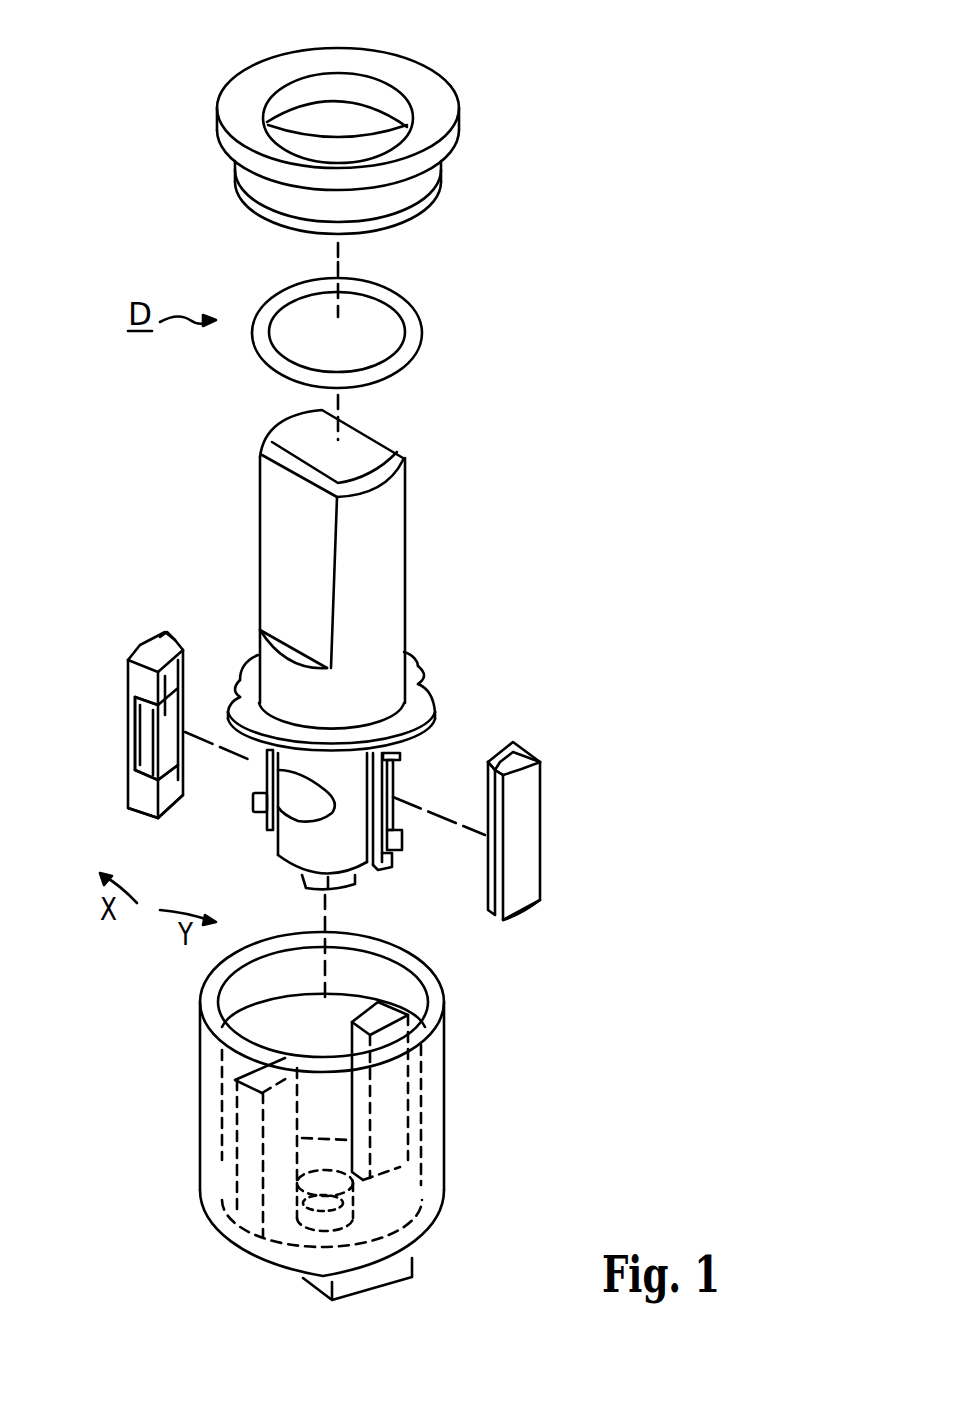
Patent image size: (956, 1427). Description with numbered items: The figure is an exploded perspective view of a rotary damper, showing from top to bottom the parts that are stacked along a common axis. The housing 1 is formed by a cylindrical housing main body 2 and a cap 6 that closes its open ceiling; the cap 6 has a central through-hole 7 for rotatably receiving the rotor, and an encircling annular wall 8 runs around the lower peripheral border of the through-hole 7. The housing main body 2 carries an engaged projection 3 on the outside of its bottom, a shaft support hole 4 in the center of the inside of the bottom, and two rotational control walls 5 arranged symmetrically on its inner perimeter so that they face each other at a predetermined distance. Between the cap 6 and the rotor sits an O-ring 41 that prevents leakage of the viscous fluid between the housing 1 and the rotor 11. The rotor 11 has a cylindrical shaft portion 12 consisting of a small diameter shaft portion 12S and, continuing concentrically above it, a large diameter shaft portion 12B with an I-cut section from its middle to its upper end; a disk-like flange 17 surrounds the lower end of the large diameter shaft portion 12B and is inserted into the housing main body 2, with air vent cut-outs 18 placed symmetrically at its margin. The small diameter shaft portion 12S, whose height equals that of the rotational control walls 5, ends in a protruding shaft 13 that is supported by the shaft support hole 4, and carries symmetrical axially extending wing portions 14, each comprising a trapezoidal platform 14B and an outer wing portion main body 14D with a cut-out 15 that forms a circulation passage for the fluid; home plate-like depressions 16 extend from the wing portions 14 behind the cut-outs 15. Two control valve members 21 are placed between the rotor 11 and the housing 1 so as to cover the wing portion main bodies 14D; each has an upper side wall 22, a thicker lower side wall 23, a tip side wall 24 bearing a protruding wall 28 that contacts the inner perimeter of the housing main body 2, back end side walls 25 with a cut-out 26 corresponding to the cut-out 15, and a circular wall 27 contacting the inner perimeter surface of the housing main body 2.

The housing 1 is at (354, 667).
The housing main body 2 is at (435, 1177).
The engaged projection 3 is at (385, 1280).
The shaft support hole 4 is at (320, 1203).
The rotational control walls 5 is at (388, 1012).
The cap 6 is at (442, 118).
The through-hole 7 is at (353, 130).
The encircling annular wall 8 is at (417, 197).
The rotor 11 is at (251, 478).
The shaft portion 12 is at (371, 674).
The large diameter shaft portion 12B is at (393, 512).
The small diameter shaft portion 12S is at (307, 840).
The protruding shaft 13 is at (348, 890).
The wing portions 14 is at (246, 799).
The platform 14B is at (385, 866).
The wing portion main body 14D is at (402, 846).
The cut-out 15 is at (393, 784).
The depressions 16 is at (295, 797).
The disk-like flange 17 is at (413, 667).
The air vent cut-outs 18 is at (226, 690).
The control valve member 21 is at (122, 654).
The upper side wall 22 is at (150, 655).
The lower side wall 23 is at (170, 798).
The tip side wall 24 is at (140, 687).
The back end side walls 25 is at (143, 692).
The cut-out 26 is at (150, 763).
The circular wall 27 is at (150, 727).
The protruding wall 28 is at (167, 637).
The O-ring 41 is at (410, 330).